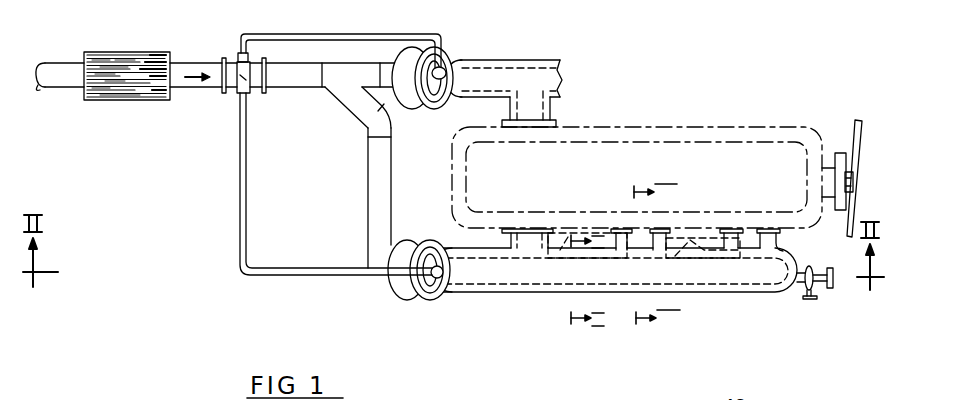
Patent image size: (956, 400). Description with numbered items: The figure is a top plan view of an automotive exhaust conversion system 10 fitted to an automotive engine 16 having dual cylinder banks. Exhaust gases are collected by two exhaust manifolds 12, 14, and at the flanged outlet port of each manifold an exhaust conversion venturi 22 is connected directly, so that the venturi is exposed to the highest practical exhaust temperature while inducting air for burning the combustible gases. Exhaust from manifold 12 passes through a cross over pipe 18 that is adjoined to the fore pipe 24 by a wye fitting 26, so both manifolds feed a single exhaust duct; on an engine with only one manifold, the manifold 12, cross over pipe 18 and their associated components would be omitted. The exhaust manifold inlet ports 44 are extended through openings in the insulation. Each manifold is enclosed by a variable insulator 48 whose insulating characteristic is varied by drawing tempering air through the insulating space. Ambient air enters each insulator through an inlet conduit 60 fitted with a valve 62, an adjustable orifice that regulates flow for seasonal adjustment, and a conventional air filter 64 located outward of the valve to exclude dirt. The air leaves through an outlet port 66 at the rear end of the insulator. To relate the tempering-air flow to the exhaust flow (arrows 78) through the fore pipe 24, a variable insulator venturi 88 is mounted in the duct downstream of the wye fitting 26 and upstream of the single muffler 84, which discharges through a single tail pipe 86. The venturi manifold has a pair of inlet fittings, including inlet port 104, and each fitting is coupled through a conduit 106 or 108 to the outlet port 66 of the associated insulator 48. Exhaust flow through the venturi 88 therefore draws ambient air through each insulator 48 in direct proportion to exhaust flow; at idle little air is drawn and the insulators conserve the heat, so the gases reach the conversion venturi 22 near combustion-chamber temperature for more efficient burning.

The exhaust conversion system 10 is at (362, 296).
The exhaust manifold 12 is at (619, 262).
The exhaust manifold 14 is at (548, 62).
The automotive engine 16 is at (729, 130).
The cross over pipe 18 is at (367, 163).
The exhaust conversion venturi 22 is at (430, 303).
The fore pipe 24 is at (198, 90).
The wye fitting 26 is at (361, 114).
The exhaust manifold inlet ports 44 is at (575, 236).
The variable insulator 48 is at (745, 294).
The inlet conduit 60 is at (807, 268).
The valve 62 is at (808, 301).
The air filter 64 is at (831, 291).
The outlet port 66 is at (452, 288).
The exhaust gas flow arrows 78 is at (195, 72).
The muffler 84 is at (132, 100).
The tail pipe 86 is at (58, 90).
The variable insulator venturi 88 is at (264, 96).
The inlet port 104 is at (240, 53).
The conduit 106 is at (240, 198).
The conduit 108 is at (453, 45).